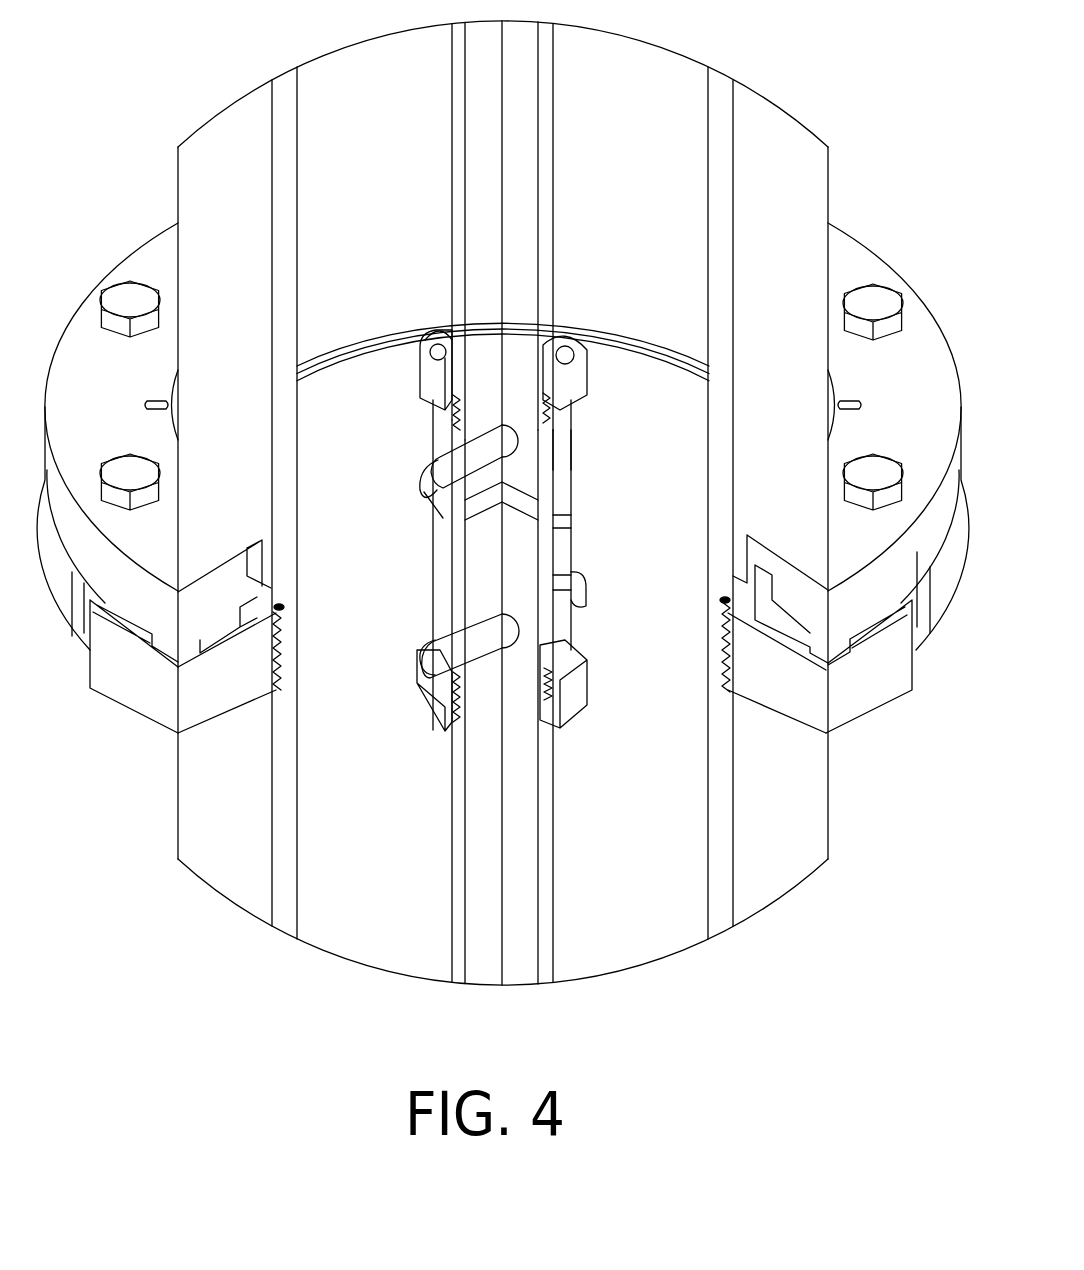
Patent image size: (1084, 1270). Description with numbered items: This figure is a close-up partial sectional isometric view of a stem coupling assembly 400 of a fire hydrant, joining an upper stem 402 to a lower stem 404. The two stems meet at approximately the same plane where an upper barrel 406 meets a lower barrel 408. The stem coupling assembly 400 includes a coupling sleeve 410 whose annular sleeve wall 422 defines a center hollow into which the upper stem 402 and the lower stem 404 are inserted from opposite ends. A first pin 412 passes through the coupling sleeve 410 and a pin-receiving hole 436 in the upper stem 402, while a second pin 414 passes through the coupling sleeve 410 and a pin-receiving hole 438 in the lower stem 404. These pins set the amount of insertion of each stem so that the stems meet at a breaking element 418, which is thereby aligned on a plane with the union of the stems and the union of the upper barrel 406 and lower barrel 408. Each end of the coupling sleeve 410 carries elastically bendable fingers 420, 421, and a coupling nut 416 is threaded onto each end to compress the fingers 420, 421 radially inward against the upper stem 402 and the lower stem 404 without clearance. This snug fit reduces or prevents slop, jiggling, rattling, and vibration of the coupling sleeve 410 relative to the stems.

The stem coupling assembly 400 is at (380, 367).
The upper stem 402 is at (548, 59).
The lower stem 404 is at (550, 960).
The upper barrel 406 is at (780, 148).
The lower barrel 408 is at (782, 808).
The coupling sleeve 410 is at (562, 468).
The first pin 412 is at (453, 472).
The second pin 414 is at (437, 647).
The coupling nut 416 is at (433, 345).
The breaking element 418 is at (553, 521).
The fingers 420 is at (581, 345).
The fingers 421 is at (570, 713).
The annular sleeve wall 422 is at (543, 580).
The pin-receiving hole 436 is at (502, 428).
The pin-receiving hole 438 is at (512, 653).